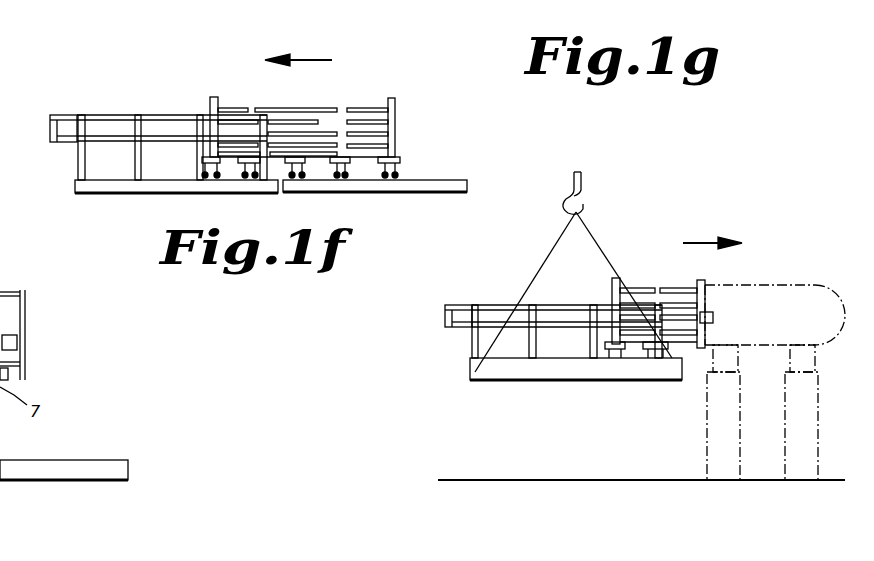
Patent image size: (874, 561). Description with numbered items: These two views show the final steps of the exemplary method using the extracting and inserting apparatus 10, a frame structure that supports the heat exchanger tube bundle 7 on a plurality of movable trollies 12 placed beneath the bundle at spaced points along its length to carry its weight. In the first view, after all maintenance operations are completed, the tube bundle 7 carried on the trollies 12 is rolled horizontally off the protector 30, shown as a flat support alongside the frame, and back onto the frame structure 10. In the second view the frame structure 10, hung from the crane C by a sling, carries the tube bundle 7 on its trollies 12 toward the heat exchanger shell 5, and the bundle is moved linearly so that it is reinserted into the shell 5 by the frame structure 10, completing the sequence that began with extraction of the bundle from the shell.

In FIG. 1G, the heat exchanger shell 5 is at (797, 273).
In FIG. 1F, the heat exchanger tube bundle 7 is at (318, 108).
In FIG. 1G, the heat exchanger tube bundle 7 is at (675, 297).
In FIG. 1F, the extracting and inserting apparatus 10 is at (100, 110).
In FIG. 1G, the extracting and inserting apparatus 10 is at (503, 409).
In FIG. 1F, the movable trollies 12 is at (457, 147).
In FIG. 1G, the movable trollies 12 is at (617, 350).
In FIG. 1F, the protector 30 is at (450, 183).
In FIG. 1G, the crane C is at (584, 212).